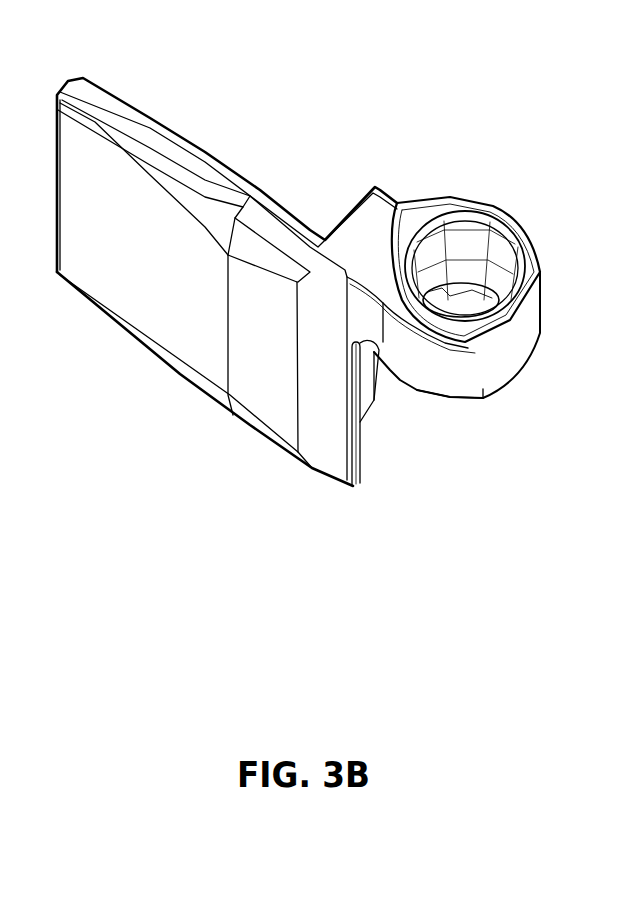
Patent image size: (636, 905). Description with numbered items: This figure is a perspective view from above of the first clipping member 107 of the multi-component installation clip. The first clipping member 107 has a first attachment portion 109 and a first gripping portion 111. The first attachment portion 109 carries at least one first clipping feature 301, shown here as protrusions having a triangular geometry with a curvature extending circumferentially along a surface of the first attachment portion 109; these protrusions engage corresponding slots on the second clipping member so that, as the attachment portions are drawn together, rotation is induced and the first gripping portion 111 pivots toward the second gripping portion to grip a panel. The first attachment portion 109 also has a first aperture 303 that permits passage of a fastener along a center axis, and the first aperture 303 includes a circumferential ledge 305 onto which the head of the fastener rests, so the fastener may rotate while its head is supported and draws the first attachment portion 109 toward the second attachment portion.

The first clipping member 107 is at (324, 122).
The first attachment portion 109 is at (524, 336).
The first gripping portion 111 is at (116, 186).
The first clipping feature 301 is at (483, 402).
The first aperture 303 is at (455, 297).
The circumferential ledge 305 is at (498, 277).